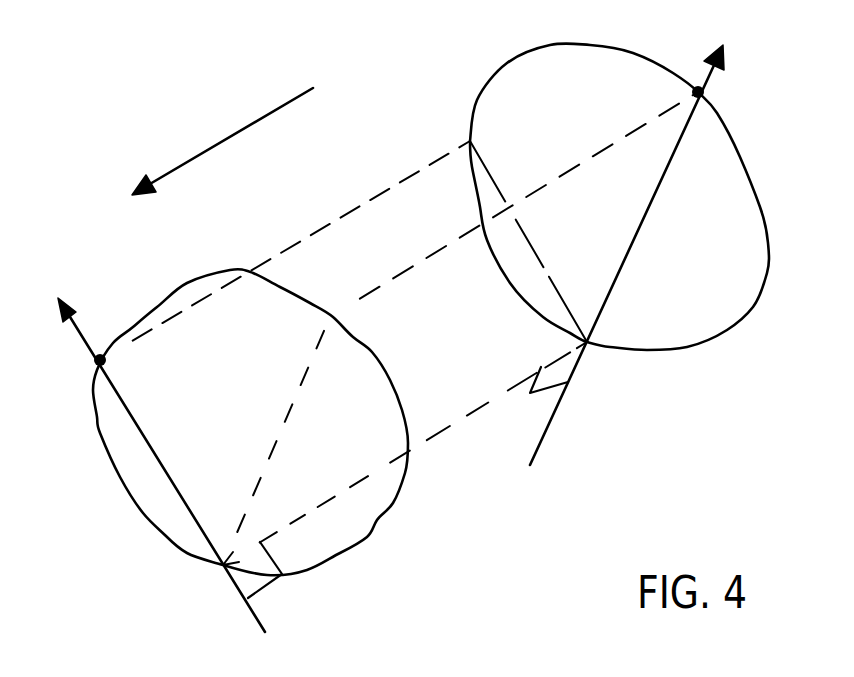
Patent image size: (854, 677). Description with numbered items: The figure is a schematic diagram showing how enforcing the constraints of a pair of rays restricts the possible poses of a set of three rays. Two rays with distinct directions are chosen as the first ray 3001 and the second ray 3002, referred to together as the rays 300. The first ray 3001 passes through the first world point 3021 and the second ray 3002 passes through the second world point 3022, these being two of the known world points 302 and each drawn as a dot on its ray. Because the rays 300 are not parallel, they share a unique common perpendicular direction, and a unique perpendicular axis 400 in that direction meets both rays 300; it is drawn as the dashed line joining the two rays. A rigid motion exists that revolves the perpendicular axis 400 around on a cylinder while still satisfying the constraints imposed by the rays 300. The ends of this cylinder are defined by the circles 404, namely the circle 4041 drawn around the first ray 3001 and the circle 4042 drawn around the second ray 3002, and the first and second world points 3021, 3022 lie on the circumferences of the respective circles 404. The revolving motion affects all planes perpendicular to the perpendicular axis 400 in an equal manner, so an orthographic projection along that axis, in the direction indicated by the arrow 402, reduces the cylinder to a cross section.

The rays 300 is at (391, 338).
The first ray 3001 is at (155, 442).
The second ray 3002 is at (634, 240).
The world points 302 is at (409, 236).
The first world point 3021 is at (114, 352).
The second world point 3022 is at (707, 90).
The perpendicular axis 400 is at (417, 442).
The arrow 402 is at (182, 163).
The circles 404 is at (431, 290).
The circle 4041 is at (192, 275).
The circle 4042 is at (598, 44).